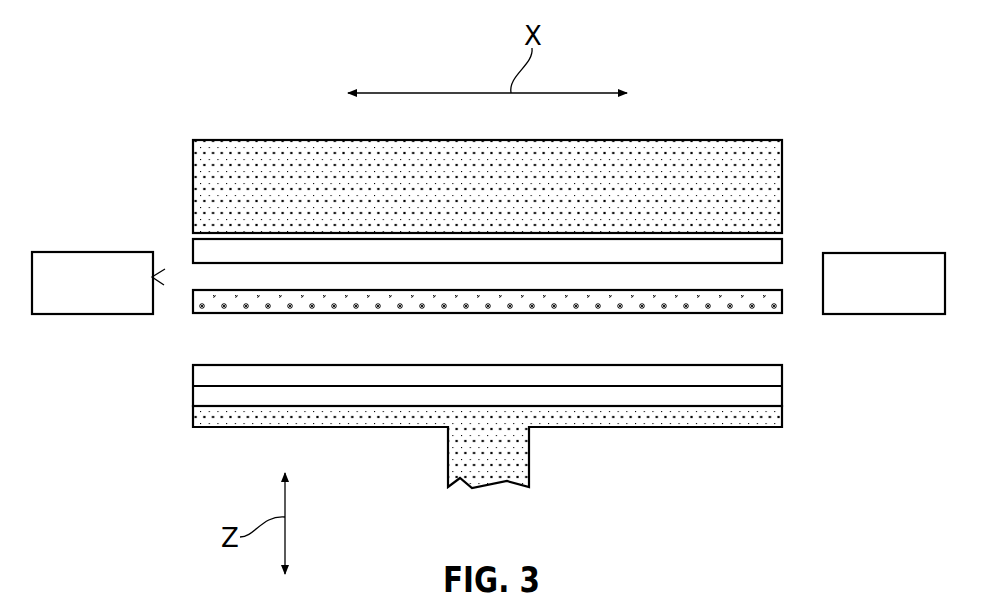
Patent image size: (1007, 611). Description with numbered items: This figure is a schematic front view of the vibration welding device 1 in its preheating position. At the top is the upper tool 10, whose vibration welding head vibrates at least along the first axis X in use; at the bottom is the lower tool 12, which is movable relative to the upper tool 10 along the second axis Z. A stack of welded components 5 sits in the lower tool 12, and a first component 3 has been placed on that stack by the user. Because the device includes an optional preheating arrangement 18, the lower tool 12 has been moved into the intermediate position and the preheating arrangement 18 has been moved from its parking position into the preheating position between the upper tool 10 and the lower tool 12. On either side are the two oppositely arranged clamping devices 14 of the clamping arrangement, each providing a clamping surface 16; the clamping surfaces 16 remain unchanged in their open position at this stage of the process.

The vibration welding device 1 is at (840, 110).
The upper tool 10 is at (783, 181).
The first component 3 is at (783, 250).
The preheating arrangement 18 is at (783, 302).
The stack of welded components 5 is at (783, 389).
The lower tool 12 is at (602, 428).
The clamping device 14 is at (88, 252).
The clamping surface 16 is at (152, 277).